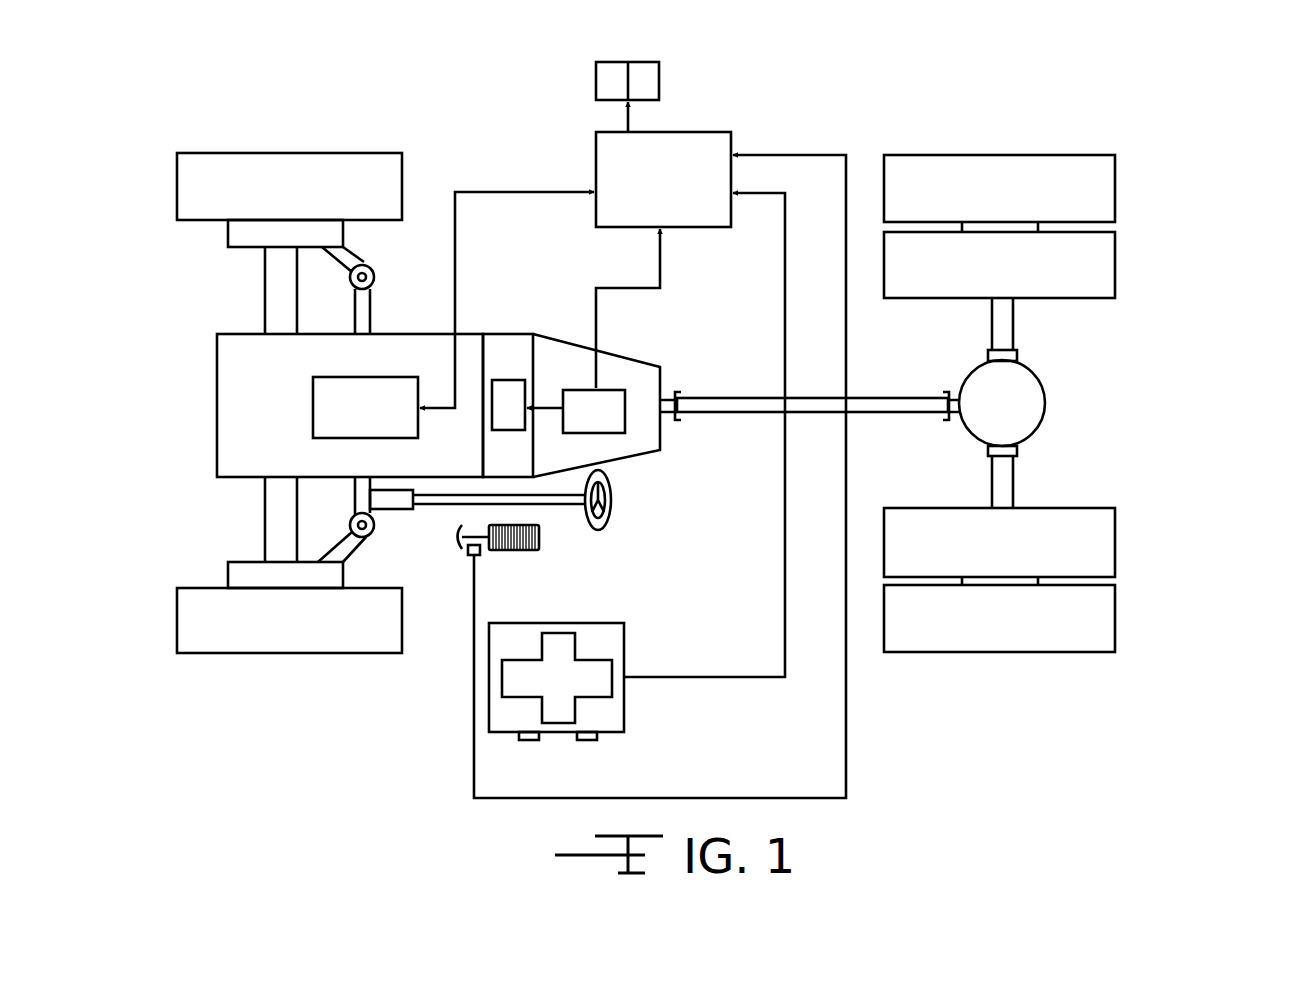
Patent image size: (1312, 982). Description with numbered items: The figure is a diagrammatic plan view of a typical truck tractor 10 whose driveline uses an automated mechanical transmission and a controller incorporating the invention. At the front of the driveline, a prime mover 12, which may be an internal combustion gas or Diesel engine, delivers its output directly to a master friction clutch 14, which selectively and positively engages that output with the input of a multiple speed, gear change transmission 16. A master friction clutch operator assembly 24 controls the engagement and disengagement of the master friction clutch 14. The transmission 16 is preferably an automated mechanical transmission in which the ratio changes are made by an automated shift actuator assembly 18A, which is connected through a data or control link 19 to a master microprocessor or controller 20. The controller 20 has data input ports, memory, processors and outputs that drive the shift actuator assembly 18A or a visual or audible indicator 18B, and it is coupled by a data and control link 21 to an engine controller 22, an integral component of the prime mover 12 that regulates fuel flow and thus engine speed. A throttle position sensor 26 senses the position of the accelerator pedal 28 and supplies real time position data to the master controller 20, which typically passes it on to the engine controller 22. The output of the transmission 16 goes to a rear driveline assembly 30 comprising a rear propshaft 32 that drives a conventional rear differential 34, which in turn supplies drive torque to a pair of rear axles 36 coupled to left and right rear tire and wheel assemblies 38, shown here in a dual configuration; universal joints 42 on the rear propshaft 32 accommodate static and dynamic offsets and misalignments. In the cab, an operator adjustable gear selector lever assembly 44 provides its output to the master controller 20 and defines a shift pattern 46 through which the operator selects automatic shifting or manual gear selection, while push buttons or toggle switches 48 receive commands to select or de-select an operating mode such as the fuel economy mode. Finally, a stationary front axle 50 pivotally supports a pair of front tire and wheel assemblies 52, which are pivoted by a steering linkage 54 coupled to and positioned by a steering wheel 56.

The truck tractor 10 is at (967, 78).
The prime mover 12 is at (228, 457).
The master friction clutch 14 is at (508, 356).
The transmission 16 is at (641, 434).
The shift actuator assembly 18A is at (627, 403).
The visual or audible indicator 18B is at (659, 80).
The data or control link 19 is at (661, 268).
The master microprocessor or controller 20 is at (715, 128).
The data and control link 21 is at (481, 191).
The engine controller 22 is at (365, 410).
The master friction clutch operator assembly 24 is at (512, 396).
The throttle position sensor 26 is at (480, 558).
The accelerator pedal 28 is at (540, 545).
The rear driveline assembly 30 is at (950, 698).
The rear propshaft 32 is at (860, 398).
The rear differential 34 is at (1020, 406).
The rear axles 36 is at (1005, 322).
The rear tire and wheel assemblies 38 is at (1167, 247).
The universal joints 42 is at (679, 395).
The gear selector lever assembly 44 is at (625, 640).
The shift pattern 46 is at (585, 686).
The push buttons or toggle switches 48 is at (585, 741).
The front axle 50 is at (275, 322).
The front tire and wheel assemblies 52 is at (321, 150).
The steering linkage 54 is at (388, 530).
The steering wheel 56 is at (612, 508).